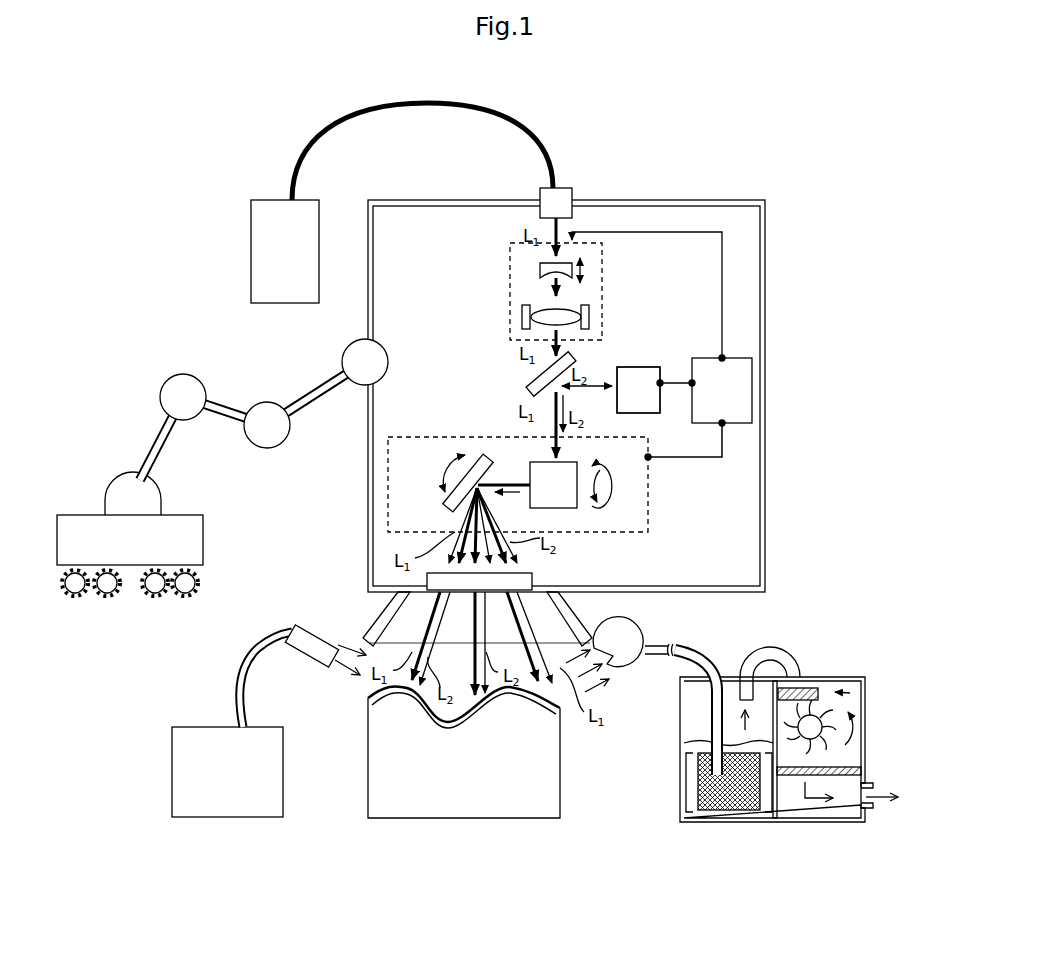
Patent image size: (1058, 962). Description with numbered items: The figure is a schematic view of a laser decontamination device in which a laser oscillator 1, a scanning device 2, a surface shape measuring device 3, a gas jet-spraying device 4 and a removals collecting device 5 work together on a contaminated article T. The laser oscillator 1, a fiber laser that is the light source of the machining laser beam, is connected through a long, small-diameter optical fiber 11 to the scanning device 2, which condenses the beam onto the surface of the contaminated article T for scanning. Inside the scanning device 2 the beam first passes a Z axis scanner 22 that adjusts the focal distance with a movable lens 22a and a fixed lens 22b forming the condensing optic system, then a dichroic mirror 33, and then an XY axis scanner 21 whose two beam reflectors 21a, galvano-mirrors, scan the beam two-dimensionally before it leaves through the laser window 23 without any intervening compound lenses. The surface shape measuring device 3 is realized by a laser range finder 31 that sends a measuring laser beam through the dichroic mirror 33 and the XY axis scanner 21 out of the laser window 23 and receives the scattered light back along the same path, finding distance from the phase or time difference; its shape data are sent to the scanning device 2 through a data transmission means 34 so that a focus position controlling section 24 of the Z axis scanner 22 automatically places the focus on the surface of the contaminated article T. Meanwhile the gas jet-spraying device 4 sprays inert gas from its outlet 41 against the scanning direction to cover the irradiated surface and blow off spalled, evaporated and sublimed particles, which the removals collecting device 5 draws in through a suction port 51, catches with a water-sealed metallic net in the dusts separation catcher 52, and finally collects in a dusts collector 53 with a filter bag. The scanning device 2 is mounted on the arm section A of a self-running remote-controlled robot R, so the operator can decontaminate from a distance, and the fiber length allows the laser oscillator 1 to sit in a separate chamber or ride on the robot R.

The laser oscillator 1 is at (251, 243).
The optical fiber 11 is at (533, 140).
The scanning device 2 is at (762, 275).
The Z axis scanner 22 is at (602, 266).
The movable lens 22a is at (540, 272).
The fixed lens 22b is at (570, 304).
The dichroic mirror 33 is at (540, 378).
The surface shape measuring device 3 is at (644, 362).
The laser range finder 31 is at (661, 400).
The data transmission means 34 is at (679, 383).
The focus position controlling section 24 is at (752, 380).
The XY axis scanner 21 is at (648, 510).
The beam reflector 21a is at (536, 460).
The laser window 23 is at (535, 577).
The gas jet-spraying device 4 is at (172, 757).
The outlet 41 is at (328, 662).
The removals collecting device 5 is at (863, 677).
The suction port 51 is at (618, 685).
The dusts separation catcher 52 is at (702, 719).
The dusts collector 53 is at (860, 700).
The contaminated article T is at (560, 776).
The remote-controlled robot R is at (203, 540).
The arm section A is at (308, 388).